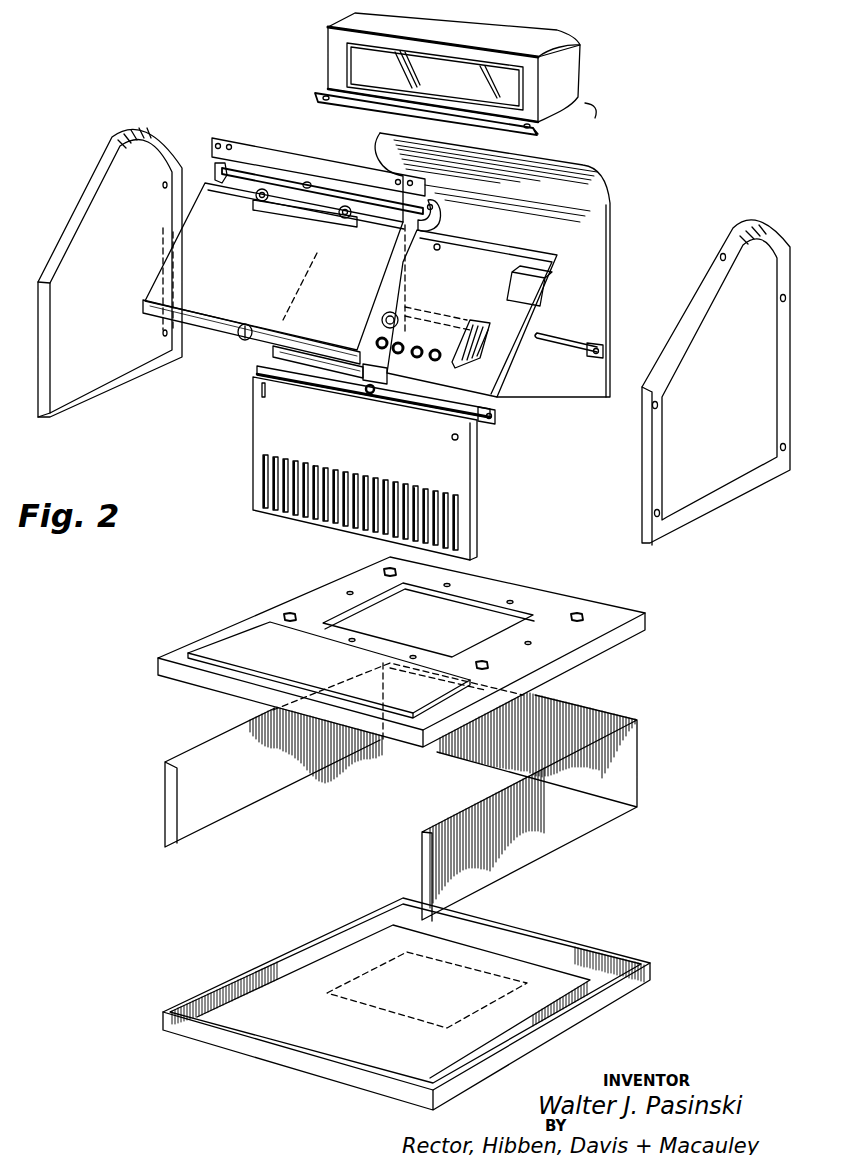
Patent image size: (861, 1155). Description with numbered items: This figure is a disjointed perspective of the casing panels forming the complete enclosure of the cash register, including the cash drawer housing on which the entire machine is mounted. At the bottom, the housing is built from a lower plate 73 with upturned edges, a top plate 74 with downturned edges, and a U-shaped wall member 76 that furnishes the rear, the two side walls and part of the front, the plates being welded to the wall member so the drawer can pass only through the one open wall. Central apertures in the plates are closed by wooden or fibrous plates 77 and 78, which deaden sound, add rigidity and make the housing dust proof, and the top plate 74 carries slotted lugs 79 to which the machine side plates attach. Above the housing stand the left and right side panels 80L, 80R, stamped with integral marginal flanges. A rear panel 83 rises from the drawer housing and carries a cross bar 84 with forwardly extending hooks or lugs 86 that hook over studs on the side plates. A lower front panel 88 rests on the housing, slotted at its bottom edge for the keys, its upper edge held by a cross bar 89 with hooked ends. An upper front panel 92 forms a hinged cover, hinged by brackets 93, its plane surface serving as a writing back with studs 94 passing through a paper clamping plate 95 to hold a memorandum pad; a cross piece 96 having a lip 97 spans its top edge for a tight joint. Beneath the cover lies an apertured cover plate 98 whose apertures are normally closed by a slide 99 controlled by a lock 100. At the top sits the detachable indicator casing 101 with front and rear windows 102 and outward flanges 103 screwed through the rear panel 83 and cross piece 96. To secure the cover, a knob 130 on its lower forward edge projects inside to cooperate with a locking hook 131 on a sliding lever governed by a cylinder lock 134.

The lower plate 73 is at (556, 947).
The top plate 74 is at (555, 603).
The U-shaped wall member 76 is at (630, 745).
The fibrous plate 77 is at (347, 962).
The fibrous plate 78 is at (460, 617).
The slotted lugs 79 is at (291, 612).
The left side panel 80L is at (127, 160).
The right side panel 80R is at (757, 258).
The rear panel 83 is at (590, 238).
The cross bar 84 is at (560, 337).
The hooks or lugs 86 is at (588, 352).
The lower front panel 88 is at (280, 417).
The cross bar 89 is at (267, 368).
The upper front panel 92 is at (195, 260).
The brackets 93 is at (214, 170).
The studs 94 is at (262, 202).
The paper clamping plate 95 is at (315, 212).
The cross piece 96 is at (268, 157).
The lip 97 is at (305, 182).
The apertured cover plate 98 is at (498, 258).
The slide 99 is at (475, 320).
The lock 100 is at (396, 312).
The indicator casing 101 is at (540, 43).
The windows 102 is at (373, 61).
The flanges 103 is at (537, 125).
The knob 130 is at (247, 325).
The locking hook 131 is at (371, 393).
The cylinder lock 134 is at (454, 439).